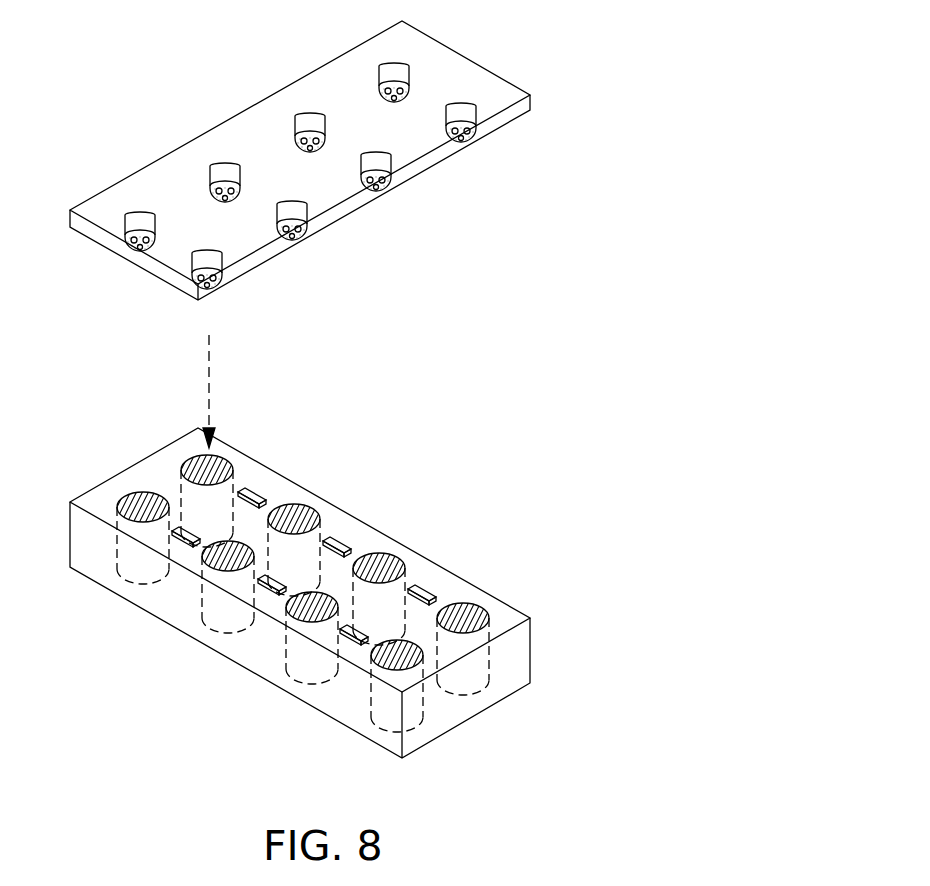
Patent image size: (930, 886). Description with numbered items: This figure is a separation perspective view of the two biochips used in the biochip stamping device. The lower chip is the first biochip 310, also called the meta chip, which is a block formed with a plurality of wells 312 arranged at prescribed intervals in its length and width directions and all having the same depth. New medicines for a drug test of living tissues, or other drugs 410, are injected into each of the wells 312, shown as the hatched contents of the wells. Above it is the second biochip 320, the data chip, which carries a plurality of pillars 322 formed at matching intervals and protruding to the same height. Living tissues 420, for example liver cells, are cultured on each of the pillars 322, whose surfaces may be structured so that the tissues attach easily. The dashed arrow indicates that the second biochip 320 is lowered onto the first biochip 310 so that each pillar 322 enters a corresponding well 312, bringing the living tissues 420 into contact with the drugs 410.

The first biochip 310 is at (515, 660).
The well 312 is at (347, 591).
The second biochip 320 is at (460, 62).
The pillar 322 is at (300, 178).
The drug 410 is at (393, 568).
The living tissue 420 is at (392, 190).